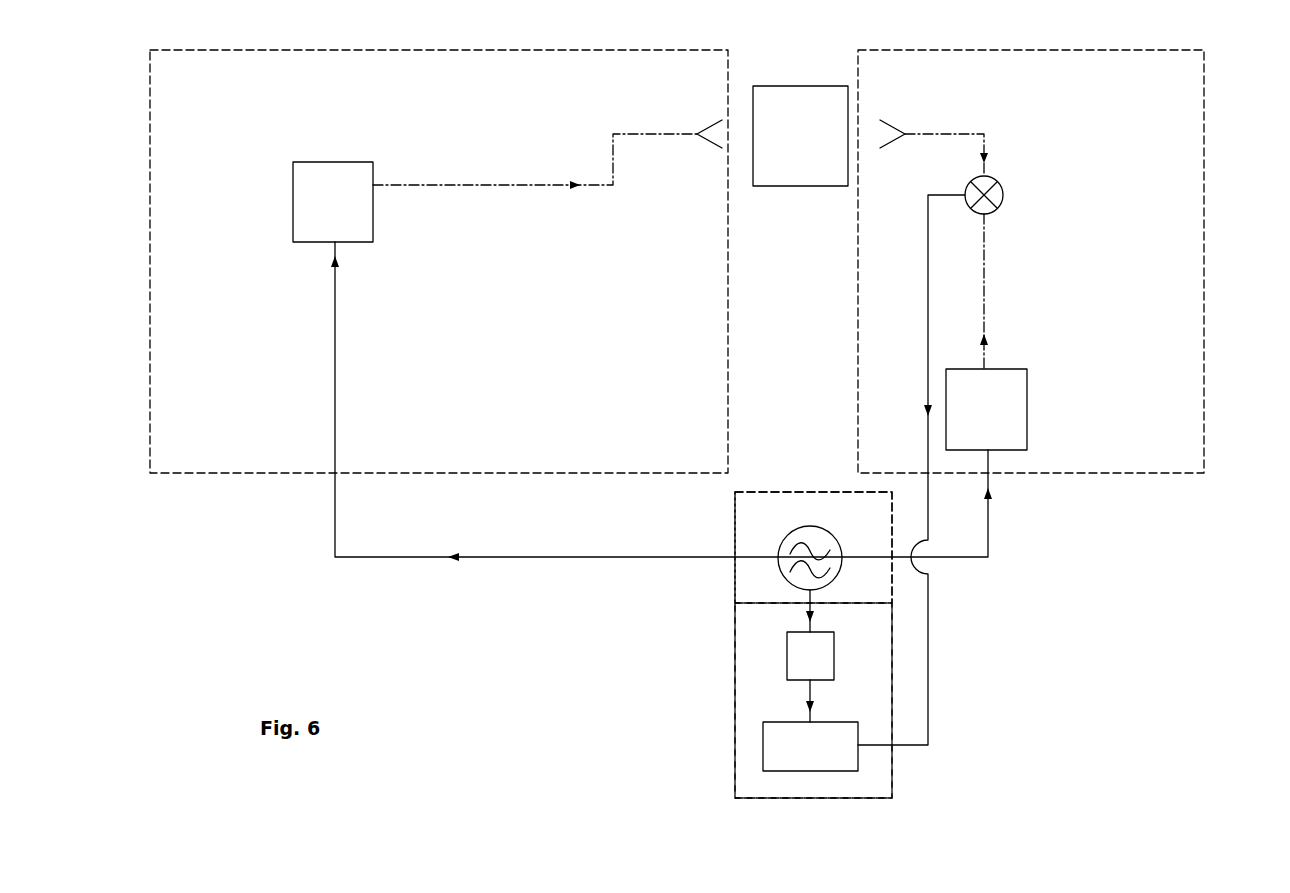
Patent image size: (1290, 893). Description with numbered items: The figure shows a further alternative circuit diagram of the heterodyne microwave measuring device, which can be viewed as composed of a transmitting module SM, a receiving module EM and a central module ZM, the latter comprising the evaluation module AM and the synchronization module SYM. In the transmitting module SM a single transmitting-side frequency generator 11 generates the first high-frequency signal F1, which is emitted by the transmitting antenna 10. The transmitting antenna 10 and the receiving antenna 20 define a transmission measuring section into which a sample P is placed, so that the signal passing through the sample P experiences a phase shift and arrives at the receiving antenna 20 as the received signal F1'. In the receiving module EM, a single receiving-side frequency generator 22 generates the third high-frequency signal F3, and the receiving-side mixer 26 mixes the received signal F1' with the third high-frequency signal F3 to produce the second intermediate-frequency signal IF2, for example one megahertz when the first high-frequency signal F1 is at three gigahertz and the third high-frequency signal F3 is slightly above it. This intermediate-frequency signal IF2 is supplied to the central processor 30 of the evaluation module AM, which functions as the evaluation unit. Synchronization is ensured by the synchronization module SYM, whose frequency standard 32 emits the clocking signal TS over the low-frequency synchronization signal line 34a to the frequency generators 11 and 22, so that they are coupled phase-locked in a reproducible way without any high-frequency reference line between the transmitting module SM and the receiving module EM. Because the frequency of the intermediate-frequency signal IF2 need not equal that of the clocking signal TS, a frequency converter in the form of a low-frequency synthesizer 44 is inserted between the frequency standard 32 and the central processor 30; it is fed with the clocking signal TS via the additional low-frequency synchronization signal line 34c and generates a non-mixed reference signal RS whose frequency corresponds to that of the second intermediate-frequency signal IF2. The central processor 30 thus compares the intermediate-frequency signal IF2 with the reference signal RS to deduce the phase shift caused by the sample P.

The transmitting antenna 10 is at (701, 130).
The transmitting-side frequency generator 11 is at (333, 202).
The receiving antenna 20 is at (898, 130).
The receiving-side frequency generator 22 is at (986, 409).
The receiving-side mixer 26 is at (1003, 195).
The central processor 30 is at (810, 746).
The frequency standard 32 is at (818, 535).
The low-frequency synchronization signal line 34a is at (957, 560).
The additional low-frequency synchronization signal line 34c is at (807, 607).
The low-frequency synthesizer 44 is at (810, 656).
The transmitting module SM is at (182, 451).
The receiving module EM is at (1185, 147).
The central module ZM is at (893, 778).
The synchronization module SYM is at (752, 577).
The evaluation module AM is at (768, 750).
The sample P is at (800, 136).
The first high-frequency signal F1 is at (535, 146).
The received first high-frequency signal F1' is at (950, 142).
The second intermediate-frequency signal IF2 is at (911, 470).
The third high-frequency signal F3 is at (996, 291).
The clocking signal TS is at (781, 572).
The reference signal RS is at (827, 701).